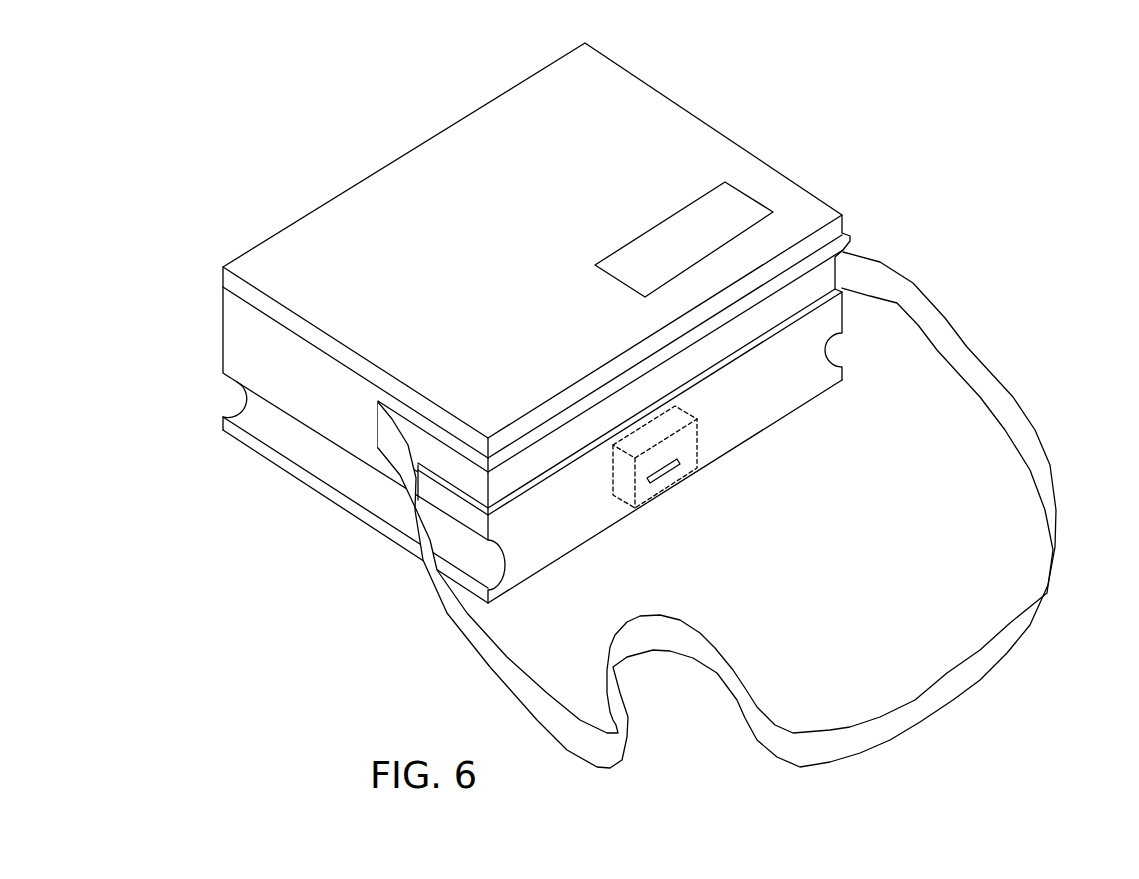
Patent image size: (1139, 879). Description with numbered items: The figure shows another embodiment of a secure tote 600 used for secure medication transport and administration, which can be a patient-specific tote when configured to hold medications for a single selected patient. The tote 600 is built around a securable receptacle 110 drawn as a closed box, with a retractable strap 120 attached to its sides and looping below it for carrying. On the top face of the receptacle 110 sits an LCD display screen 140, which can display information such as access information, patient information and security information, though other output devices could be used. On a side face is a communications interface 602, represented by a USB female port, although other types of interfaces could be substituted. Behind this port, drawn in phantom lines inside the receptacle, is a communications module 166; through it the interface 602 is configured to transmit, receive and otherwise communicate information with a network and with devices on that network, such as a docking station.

The secure tote 600 is at (639, 402).
The securable receptacle 110 is at (423, 162).
The retractable strap 120 is at (972, 368).
The display screen 140 is at (737, 203).
The communications module 166 is at (617, 468).
The communications interface 602 is at (667, 470).